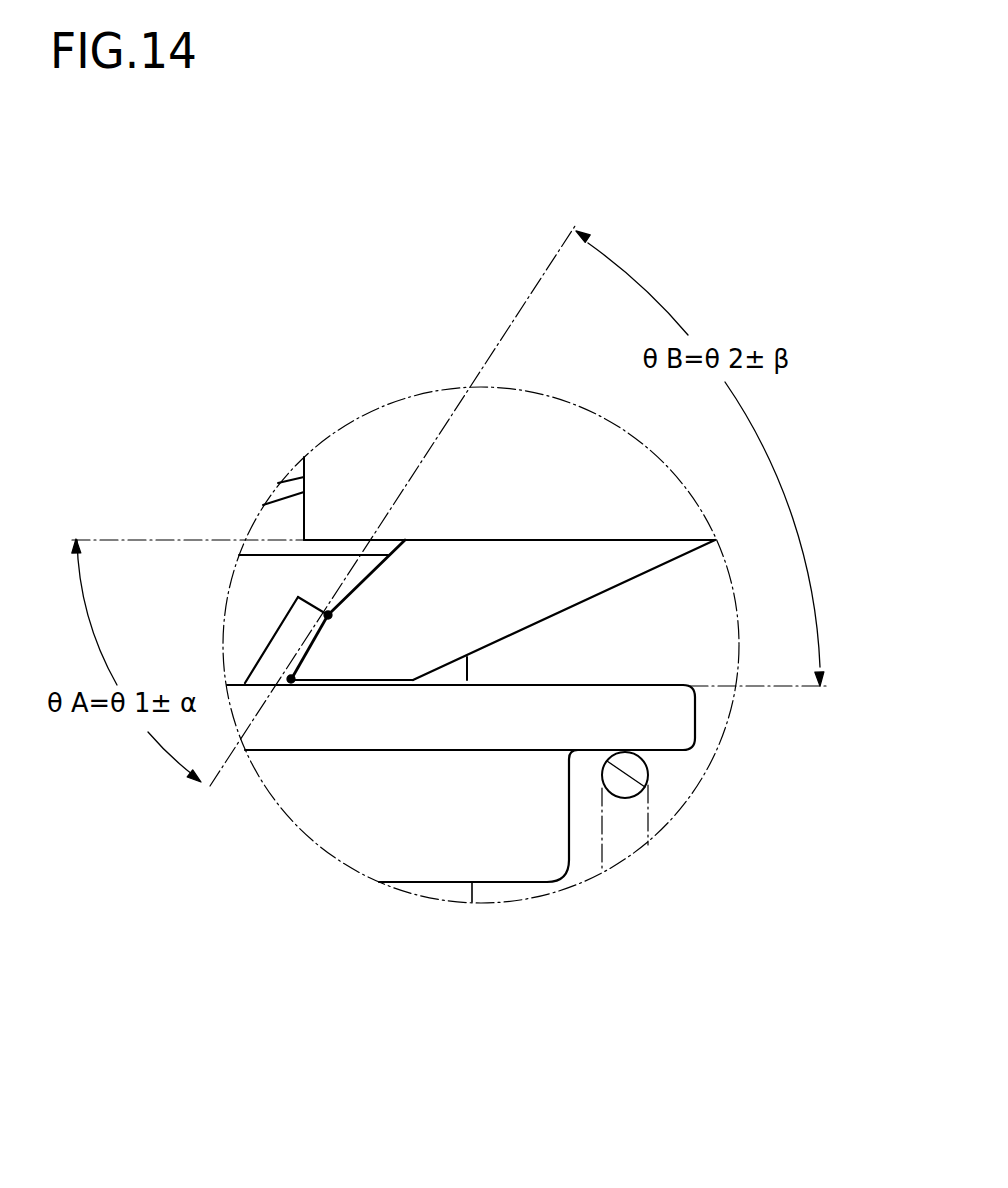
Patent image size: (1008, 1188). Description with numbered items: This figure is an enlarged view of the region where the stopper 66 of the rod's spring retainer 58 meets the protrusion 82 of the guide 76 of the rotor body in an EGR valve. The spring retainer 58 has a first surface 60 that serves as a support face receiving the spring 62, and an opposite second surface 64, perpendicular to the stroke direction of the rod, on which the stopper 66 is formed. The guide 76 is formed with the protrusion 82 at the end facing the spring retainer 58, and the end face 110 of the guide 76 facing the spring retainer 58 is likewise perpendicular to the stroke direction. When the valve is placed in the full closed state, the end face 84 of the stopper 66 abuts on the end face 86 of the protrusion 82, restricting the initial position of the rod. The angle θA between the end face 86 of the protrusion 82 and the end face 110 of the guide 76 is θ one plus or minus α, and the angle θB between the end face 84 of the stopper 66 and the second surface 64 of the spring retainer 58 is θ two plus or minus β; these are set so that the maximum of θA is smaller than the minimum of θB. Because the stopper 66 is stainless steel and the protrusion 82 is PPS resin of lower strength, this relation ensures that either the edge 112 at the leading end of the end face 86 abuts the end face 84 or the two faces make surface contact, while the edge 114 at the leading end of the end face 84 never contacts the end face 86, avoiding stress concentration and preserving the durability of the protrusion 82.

The spring retainer 58 is at (658, 723).
The first surface 60 is at (593, 750).
The spring 62 is at (628, 782).
The second surface 64 is at (630, 685).
The stopper 66 is at (278, 648).
The guide 76 is at (537, 432).
The protrusion 82 is at (585, 580).
The end face of the stopper 84 is at (330, 620).
The end face of the protrusion 86 is at (375, 580).
The end face of the guide 110 is at (326, 541).
The edge at the leading end of the protrusion end face 112 is at (290, 680).
The edge at the leading end of the stopper end face 114 is at (338, 622).